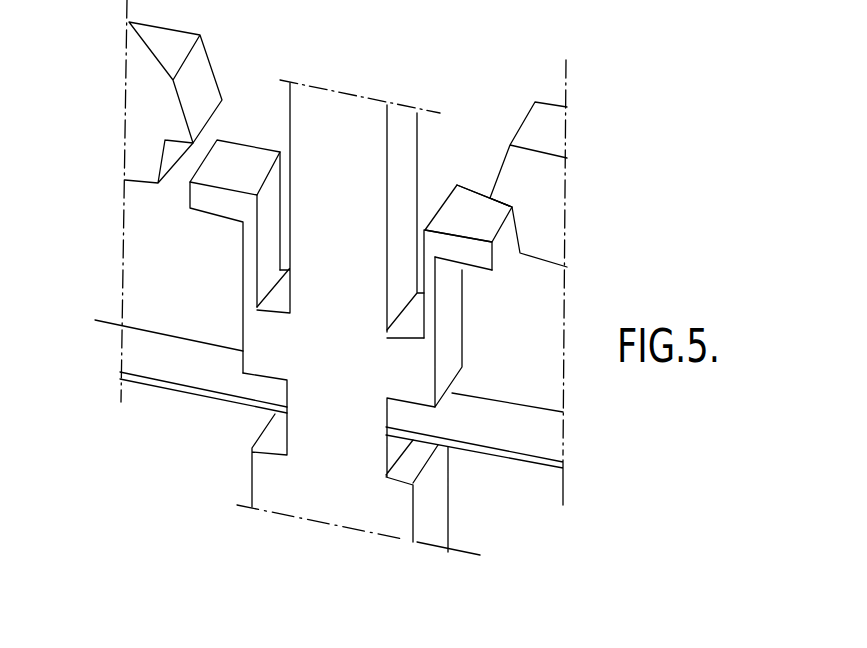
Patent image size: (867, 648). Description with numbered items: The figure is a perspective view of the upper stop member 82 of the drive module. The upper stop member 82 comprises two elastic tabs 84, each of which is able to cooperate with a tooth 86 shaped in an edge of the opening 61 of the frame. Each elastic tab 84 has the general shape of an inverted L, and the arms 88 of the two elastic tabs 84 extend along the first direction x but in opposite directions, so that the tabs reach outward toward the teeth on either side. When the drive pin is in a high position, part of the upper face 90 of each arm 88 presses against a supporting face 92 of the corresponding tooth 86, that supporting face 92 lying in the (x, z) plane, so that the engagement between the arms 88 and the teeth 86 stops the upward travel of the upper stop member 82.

The opening 61 is at (430, 182).
The upper stop member 82 is at (260, 132).
The elastic tabs 84 is at (243, 288).
The tooth 86 is at (162, 52).
The arms 88 is at (232, 173).
The upper face 90 is at (492, 213).
The supporting face 92 is at (478, 270).